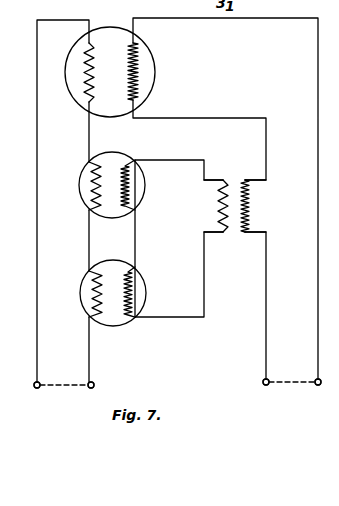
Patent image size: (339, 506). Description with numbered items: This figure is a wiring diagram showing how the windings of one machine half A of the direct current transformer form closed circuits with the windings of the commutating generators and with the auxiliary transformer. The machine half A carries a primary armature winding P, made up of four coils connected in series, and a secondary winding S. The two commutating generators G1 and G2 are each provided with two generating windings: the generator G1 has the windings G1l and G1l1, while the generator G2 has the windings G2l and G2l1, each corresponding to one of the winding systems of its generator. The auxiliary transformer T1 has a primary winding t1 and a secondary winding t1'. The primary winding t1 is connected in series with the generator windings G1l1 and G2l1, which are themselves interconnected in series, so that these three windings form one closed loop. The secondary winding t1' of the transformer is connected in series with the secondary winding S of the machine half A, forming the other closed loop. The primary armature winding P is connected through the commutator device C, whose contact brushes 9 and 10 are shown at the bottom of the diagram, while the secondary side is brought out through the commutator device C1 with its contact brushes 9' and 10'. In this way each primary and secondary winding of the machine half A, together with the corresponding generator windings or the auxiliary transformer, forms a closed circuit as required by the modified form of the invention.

The primary armature winding P is at (84, 58).
The secondary winding S is at (137, 66).
The machine half A is at (108, 117).
The commutating generator G1 is at (104, 218).
The generating winding G1l is at (96, 170).
The generating winding G1l1 is at (128, 180).
The commutating generator G2 is at (110, 326).
The generating winding G2l is at (97, 282).
The generating winding G2l1 is at (131, 281).
The auxiliary transformer T1 is at (235, 197).
The primary winding of auxiliary transformer t1 is at (210, 206).
The secondary winding of auxiliary transformer t1' is at (259, 206).
The commutator device C is at (64, 376).
The commutator device C1 is at (292, 373).
The contact brush 9 is at (94, 397).
The contact brush 10 is at (32, 397).
The contact brush 9' is at (273, 396).
The contact brush 10' is at (323, 396).